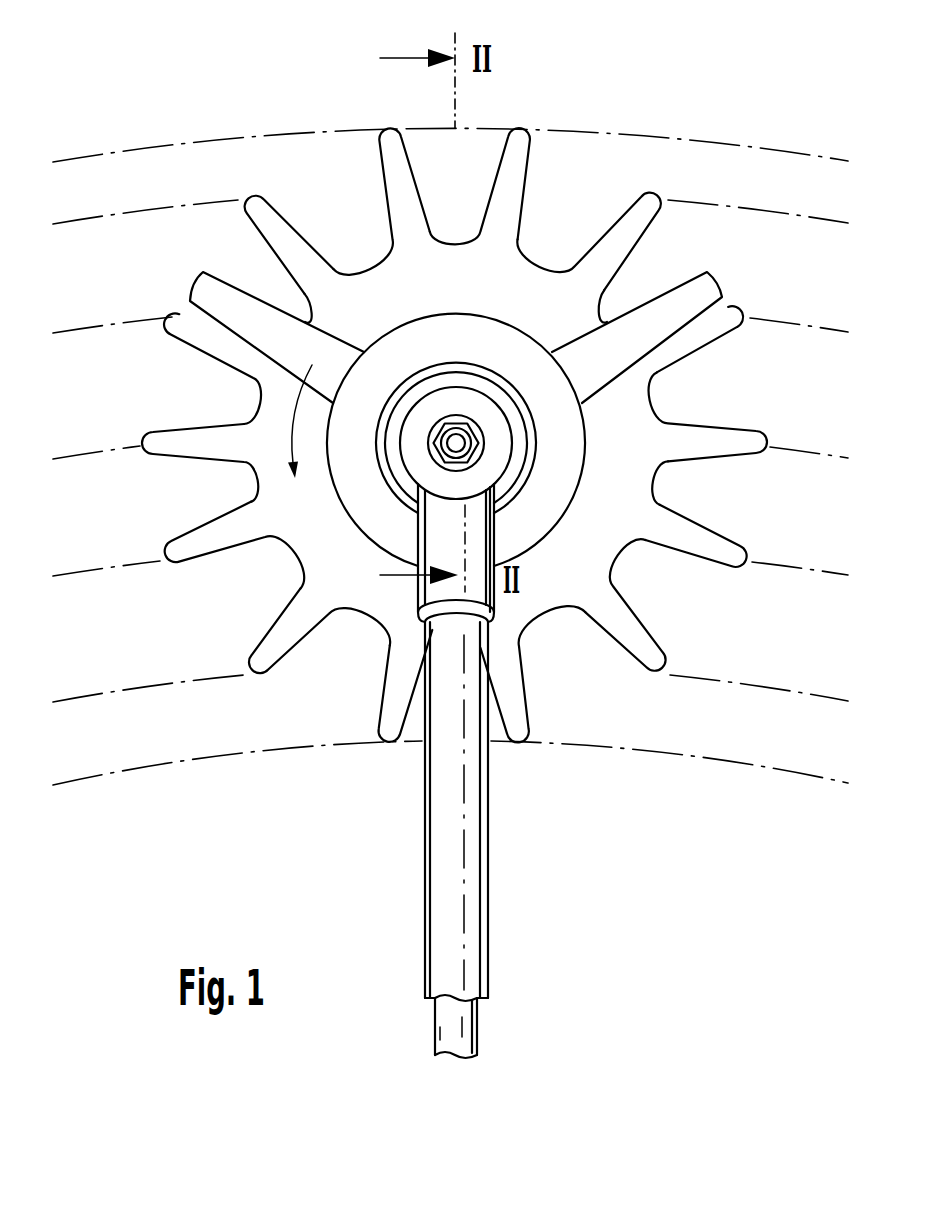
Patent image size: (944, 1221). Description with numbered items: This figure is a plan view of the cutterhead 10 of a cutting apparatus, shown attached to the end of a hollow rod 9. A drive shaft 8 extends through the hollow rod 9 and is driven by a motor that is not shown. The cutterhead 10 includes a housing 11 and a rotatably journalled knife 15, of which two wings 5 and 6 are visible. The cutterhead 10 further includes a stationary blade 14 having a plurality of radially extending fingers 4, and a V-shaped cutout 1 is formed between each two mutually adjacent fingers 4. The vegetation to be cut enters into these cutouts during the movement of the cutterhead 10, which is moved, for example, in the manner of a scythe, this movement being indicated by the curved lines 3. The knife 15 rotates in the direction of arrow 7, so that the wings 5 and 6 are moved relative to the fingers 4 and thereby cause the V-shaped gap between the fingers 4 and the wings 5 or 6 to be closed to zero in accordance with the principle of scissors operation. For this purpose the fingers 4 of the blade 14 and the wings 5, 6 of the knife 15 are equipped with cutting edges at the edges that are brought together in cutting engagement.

The V-shaped cutout 1 is at (429, 435).
The curved lines 3 is at (792, 690).
The fingers 4 is at (176, 322).
The wing 5 is at (712, 288).
The wing 6 is at (200, 292).
The arrow 7 is at (268, 401).
The drive shaft 8 is at (478, 1040).
The hollow rod 9 is at (472, 903).
The cutterhead 10 is at (256, 86).
The housing 11 is at (412, 461).
The stationary blade 14 is at (618, 485).
The knife 15 is at (562, 436).